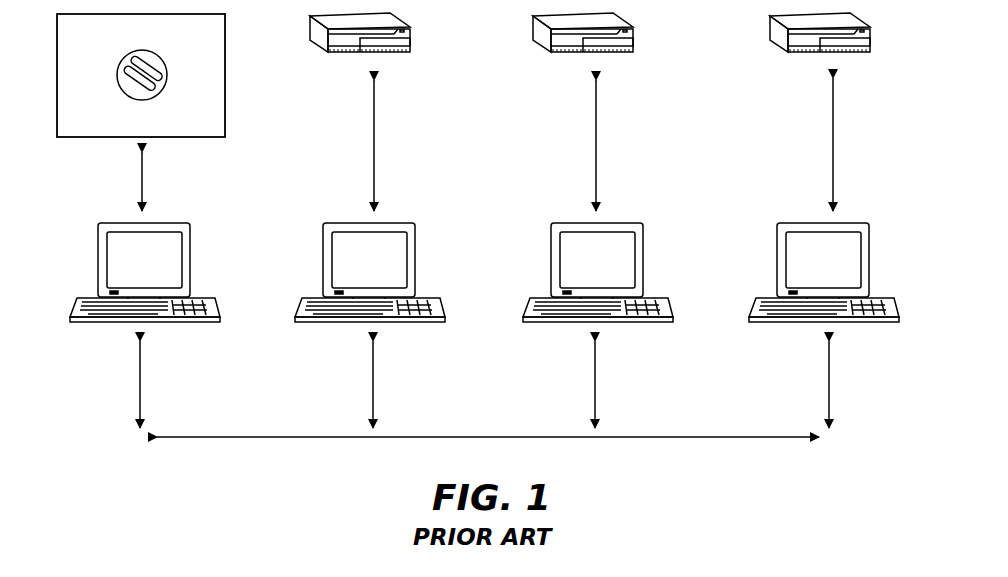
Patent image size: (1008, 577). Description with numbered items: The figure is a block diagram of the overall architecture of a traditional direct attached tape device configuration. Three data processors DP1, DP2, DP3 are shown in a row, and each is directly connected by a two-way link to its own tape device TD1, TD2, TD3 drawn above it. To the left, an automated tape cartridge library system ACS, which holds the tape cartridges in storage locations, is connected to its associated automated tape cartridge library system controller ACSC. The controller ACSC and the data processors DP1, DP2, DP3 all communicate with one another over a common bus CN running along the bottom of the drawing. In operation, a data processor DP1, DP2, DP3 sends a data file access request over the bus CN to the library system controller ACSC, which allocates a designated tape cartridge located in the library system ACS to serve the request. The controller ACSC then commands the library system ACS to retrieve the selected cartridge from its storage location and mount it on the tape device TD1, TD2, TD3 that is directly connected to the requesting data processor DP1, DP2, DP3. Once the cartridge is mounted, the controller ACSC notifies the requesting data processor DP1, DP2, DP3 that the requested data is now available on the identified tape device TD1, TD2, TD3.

The automated tape cartridge library system ACS is at (165, 88).
The automated tape cartridge library system controller ACSC is at (190, 268).
The tape device TD1 is at (388, 52).
The tape device TD2 is at (615, 50).
The tape device TD3 is at (812, 50).
The data processor DP1 is at (415, 257).
The data processor DP2 is at (643, 247).
The data processor DP3 is at (777, 265).
The bus CN is at (478, 437).